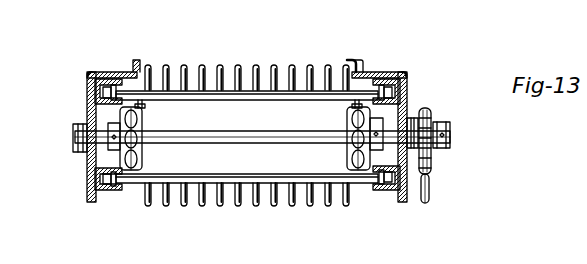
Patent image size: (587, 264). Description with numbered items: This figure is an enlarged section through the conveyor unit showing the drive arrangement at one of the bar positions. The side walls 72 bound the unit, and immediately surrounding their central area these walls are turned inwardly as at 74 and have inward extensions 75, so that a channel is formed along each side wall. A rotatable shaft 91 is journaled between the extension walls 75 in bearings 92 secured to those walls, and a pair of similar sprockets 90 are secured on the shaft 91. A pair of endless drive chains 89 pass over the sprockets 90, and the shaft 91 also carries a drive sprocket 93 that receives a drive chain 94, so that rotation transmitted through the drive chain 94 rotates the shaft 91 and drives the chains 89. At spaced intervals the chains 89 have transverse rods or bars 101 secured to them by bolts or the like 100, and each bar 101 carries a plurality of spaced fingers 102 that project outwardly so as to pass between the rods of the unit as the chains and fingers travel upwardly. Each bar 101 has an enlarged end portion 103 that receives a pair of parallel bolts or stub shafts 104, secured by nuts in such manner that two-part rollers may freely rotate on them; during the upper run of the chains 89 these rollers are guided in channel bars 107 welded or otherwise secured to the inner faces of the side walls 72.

The side walls 72 is at (87, 77).
The inwardly turned portion 74 is at (113, 72).
The inward extensions 75 is at (137, 67).
The endless drive chains 89 is at (138, 109).
The sprockets 90 is at (150, 157).
The rotatable shaft 91 is at (233, 144).
The bearings 92 is at (80, 153).
The drive sprocket 93 is at (432, 120).
The drive chain 94 is at (433, 181).
The bolts 100 is at (164, 67).
The transverse rods or bars 101 is at (250, 108).
The fingers 102 is at (232, 73).
The enlarged end portion 103 is at (121, 85).
The bolts or stub shafts 104 is at (100, 97).
The channel bars 107 is at (90, 72).